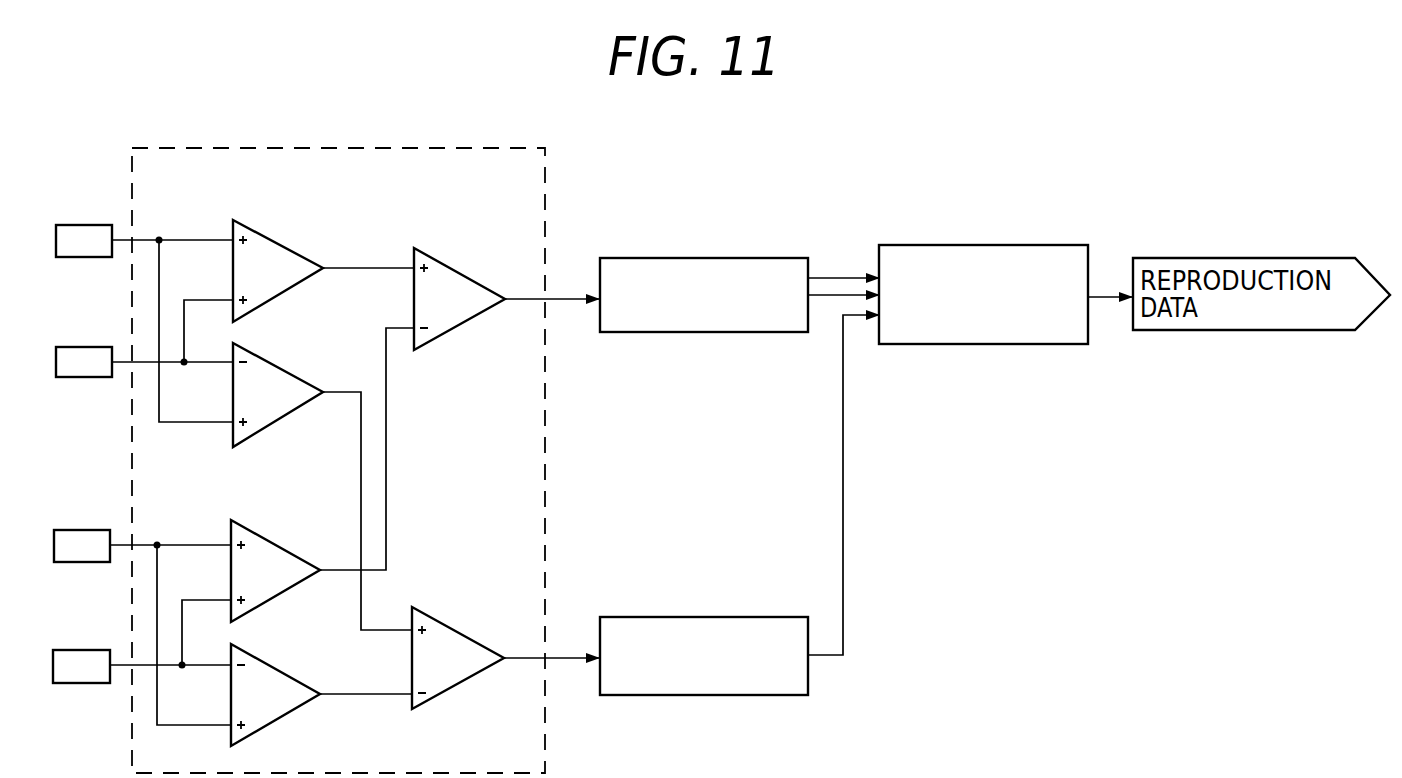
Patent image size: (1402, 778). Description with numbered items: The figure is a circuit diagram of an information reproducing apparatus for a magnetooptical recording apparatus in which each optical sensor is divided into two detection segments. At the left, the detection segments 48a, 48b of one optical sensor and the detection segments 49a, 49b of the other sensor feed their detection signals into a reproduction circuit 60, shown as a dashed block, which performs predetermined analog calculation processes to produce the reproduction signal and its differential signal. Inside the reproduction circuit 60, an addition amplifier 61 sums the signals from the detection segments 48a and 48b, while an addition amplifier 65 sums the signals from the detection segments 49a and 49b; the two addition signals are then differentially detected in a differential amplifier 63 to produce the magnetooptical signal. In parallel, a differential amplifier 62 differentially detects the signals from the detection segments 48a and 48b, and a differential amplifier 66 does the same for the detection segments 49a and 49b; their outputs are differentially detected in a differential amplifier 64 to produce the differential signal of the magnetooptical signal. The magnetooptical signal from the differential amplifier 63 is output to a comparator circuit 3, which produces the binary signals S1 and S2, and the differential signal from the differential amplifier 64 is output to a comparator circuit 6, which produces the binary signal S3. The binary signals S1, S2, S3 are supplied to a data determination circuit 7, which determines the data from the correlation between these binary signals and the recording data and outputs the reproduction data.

The reproduction circuit 60 is at (470, 148).
The detection segment 48a is at (74, 224).
The detection segment 48b is at (65, 345).
The detection segment 49a is at (68, 528).
The detection segment 49b is at (65, 648).
The addition amplifier 61 is at (267, 243).
The differential amplifier 62 is at (267, 367).
The differential amplifier 63 is at (457, 271).
The differential amplifier 64 is at (446, 633).
The addition amplifier 65 is at (265, 548).
The differential amplifier 66 is at (265, 662).
The comparator circuit 3 is at (770, 258).
The comparator circuit 6 is at (763, 617).
The data determination circuit 7 is at (1037, 245).
The binary signal S1 is at (842, 276).
The binary signal S2 is at (828, 298).
The binary signal S3 is at (843, 538).